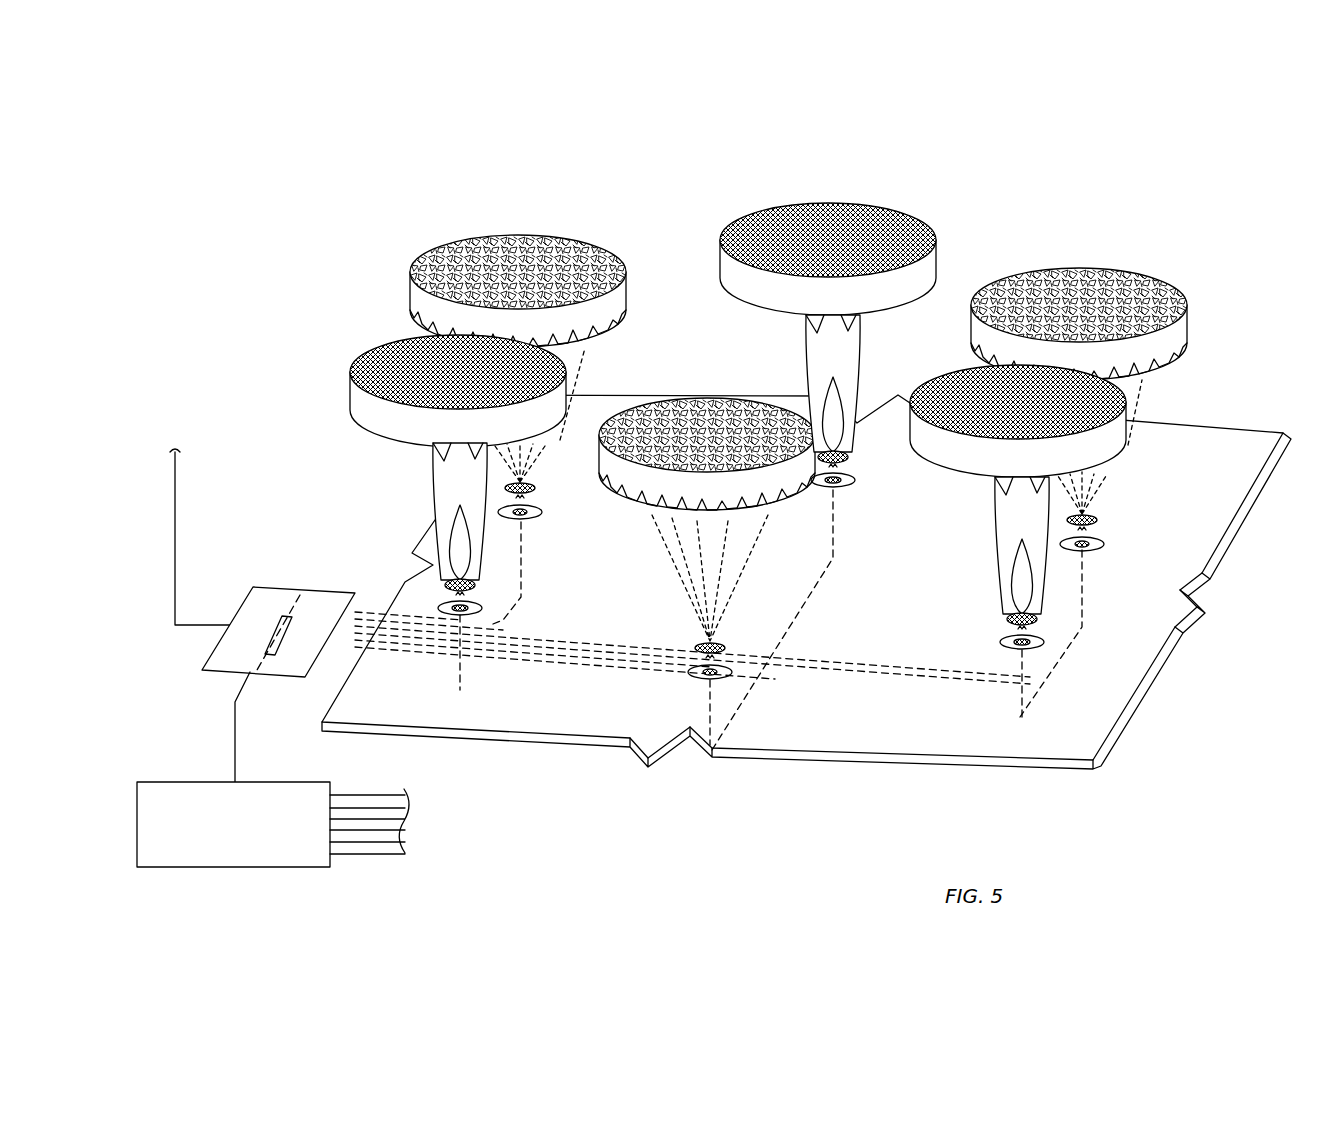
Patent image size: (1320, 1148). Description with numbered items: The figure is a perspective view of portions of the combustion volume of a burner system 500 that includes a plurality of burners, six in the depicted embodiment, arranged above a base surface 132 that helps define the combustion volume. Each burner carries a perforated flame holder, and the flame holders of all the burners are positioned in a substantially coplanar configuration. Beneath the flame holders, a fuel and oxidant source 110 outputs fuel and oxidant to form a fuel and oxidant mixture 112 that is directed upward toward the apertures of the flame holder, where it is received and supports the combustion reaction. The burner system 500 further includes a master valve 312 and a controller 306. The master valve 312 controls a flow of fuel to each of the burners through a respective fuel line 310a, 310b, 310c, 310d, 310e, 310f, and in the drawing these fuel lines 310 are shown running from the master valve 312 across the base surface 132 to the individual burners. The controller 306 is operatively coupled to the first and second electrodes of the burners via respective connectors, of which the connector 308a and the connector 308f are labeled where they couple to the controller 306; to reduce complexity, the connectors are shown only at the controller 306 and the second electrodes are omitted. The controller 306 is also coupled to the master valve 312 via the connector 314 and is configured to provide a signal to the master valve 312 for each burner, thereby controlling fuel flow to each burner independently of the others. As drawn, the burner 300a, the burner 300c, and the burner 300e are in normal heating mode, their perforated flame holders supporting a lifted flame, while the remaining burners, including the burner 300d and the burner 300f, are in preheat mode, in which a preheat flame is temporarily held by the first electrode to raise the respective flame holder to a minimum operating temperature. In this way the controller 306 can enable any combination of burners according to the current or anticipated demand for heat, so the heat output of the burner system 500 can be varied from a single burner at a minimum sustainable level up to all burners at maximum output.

The burner system 500 is at (1162, 146).
The burner 300a is at (476, 243).
The burner 300c is at (1127, 316).
The burner 300d is at (1038, 507).
The burner 300e is at (752, 469).
The burner 300f is at (412, 475).
The fuel line 310 is at (176, 504).
The fuel line 310a is at (525, 544).
The fuel line 310b is at (838, 498).
The fuel line 310c is at (1088, 568).
The fuel line 310d is at (1048, 688).
The fuel line 310e is at (756, 701).
The fuel line 310f is at (473, 678).
The master valve 312 is at (292, 585).
The connector 314 is at (234, 717).
The controller 306 is at (155, 782).
The connector 308a is at (365, 793).
The connector 308f is at (358, 858).
The fuel and oxidant source 110 is at (680, 690).
The fuel and oxidant mixture 112 is at (672, 590).
The base surface 132 is at (980, 730).